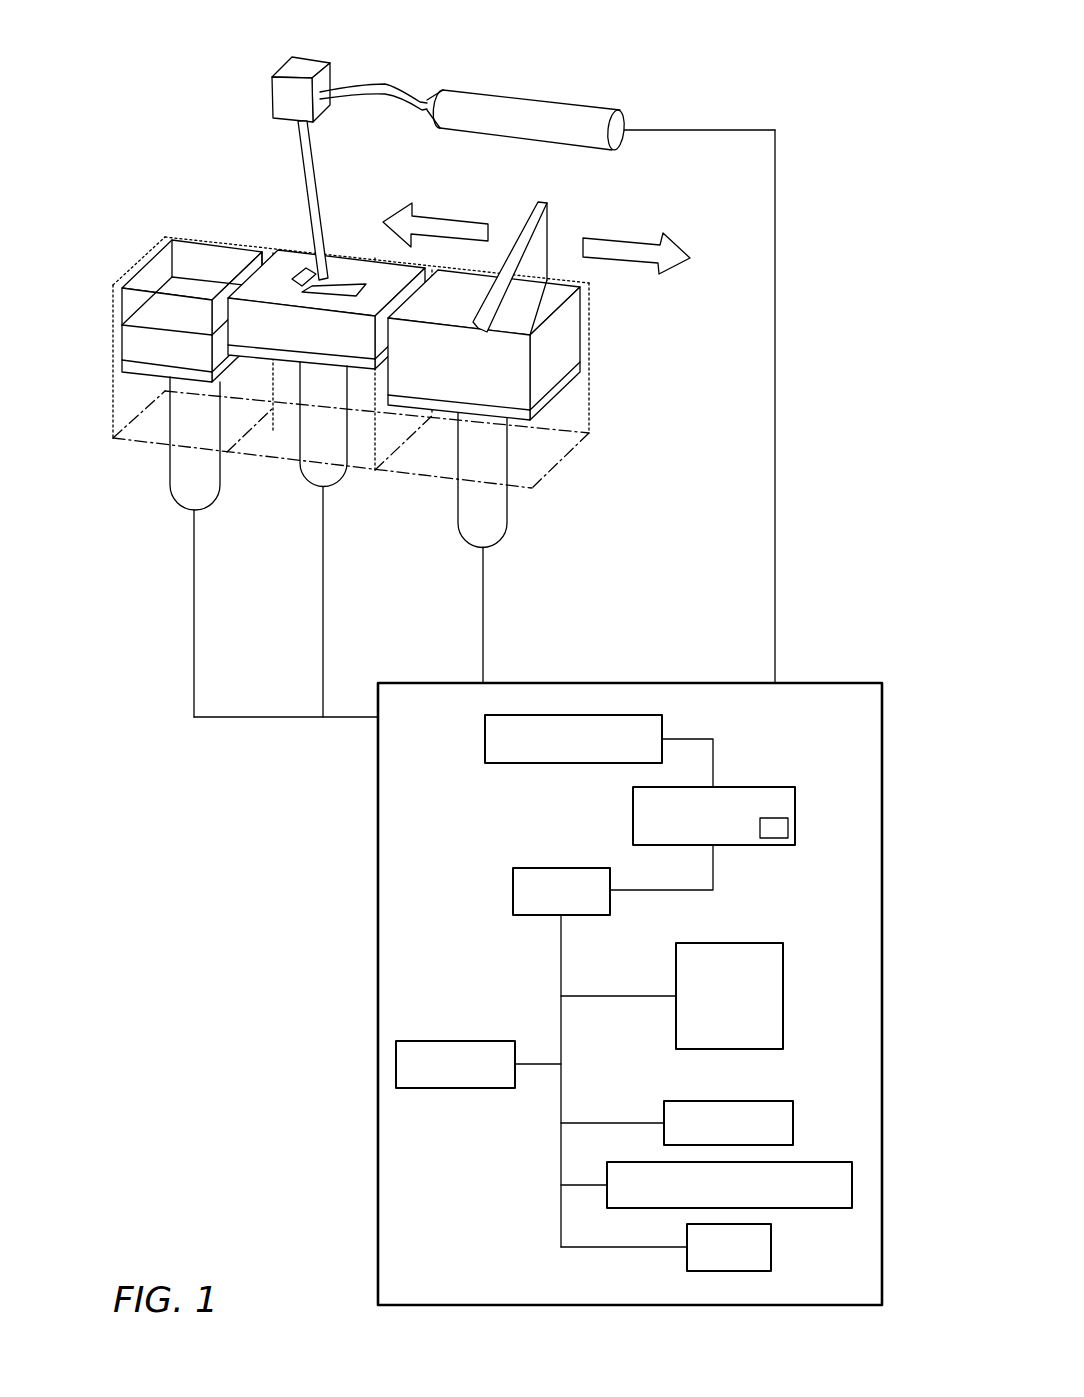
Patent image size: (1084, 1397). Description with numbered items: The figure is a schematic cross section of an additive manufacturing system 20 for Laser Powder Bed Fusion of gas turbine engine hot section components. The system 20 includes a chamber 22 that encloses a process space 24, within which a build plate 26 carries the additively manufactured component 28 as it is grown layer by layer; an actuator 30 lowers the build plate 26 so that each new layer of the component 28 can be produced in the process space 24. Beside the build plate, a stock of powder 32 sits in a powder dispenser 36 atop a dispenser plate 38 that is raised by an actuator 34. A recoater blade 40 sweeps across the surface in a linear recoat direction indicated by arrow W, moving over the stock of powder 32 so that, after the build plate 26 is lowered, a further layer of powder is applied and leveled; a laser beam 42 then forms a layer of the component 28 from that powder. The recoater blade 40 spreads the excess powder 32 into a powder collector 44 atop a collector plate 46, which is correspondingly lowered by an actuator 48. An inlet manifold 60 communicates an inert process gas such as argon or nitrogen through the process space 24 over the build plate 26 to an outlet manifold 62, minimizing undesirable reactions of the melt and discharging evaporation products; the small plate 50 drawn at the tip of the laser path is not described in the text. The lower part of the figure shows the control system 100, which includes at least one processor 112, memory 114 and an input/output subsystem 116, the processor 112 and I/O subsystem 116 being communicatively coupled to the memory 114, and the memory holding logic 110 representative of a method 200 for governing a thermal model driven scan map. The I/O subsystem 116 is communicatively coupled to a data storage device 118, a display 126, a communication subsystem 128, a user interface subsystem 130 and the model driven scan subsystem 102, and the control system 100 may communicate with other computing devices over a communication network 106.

The additive manufacturing system 20 is at (602, 68).
The chamber 22 is at (270, 467).
The process space 24 is at (365, 450).
The build plate 26 is at (292, 353).
The additively manufactured component 28 is at (297, 278).
The actuator 30 is at (338, 487).
The stock of powder 32 is at (523, 325).
The actuator 34 is at (497, 540).
The powder dispenser 36 is at (578, 448).
The dispenser plate 38 is at (553, 395).
The recoater blade 40 is at (542, 258).
The laser beam 42 is at (300, 153).
The powder collector 44 is at (100, 330).
The collector plate 46 is at (140, 373).
The actuator 48 is at (182, 495).
The scraper plate 50 is at (312, 273).
The inlet manifold 60 is at (413, 263).
The outlet manifold 62 is at (263, 332).
The arrow indicating linear recoat direction W is at (478, 222).
The control system 100 is at (830, 683).
The model driven scan subsystem 102 is at (783, 975).
The communication network 106 is at (561, 1213).
The logic 110 is at (782, 813).
The processor 112 is at (485, 745).
The memory 114 is at (758, 787).
The input/output (I/O) subsystem 116 is at (513, 887).
The data storage device 118 is at (452, 1088).
The display 126 is at (793, 1115).
The communication subsystem 128 is at (852, 1180).
The user interface (UI) subsystem 130 is at (771, 1245).
The method 200 is at (782, 847).